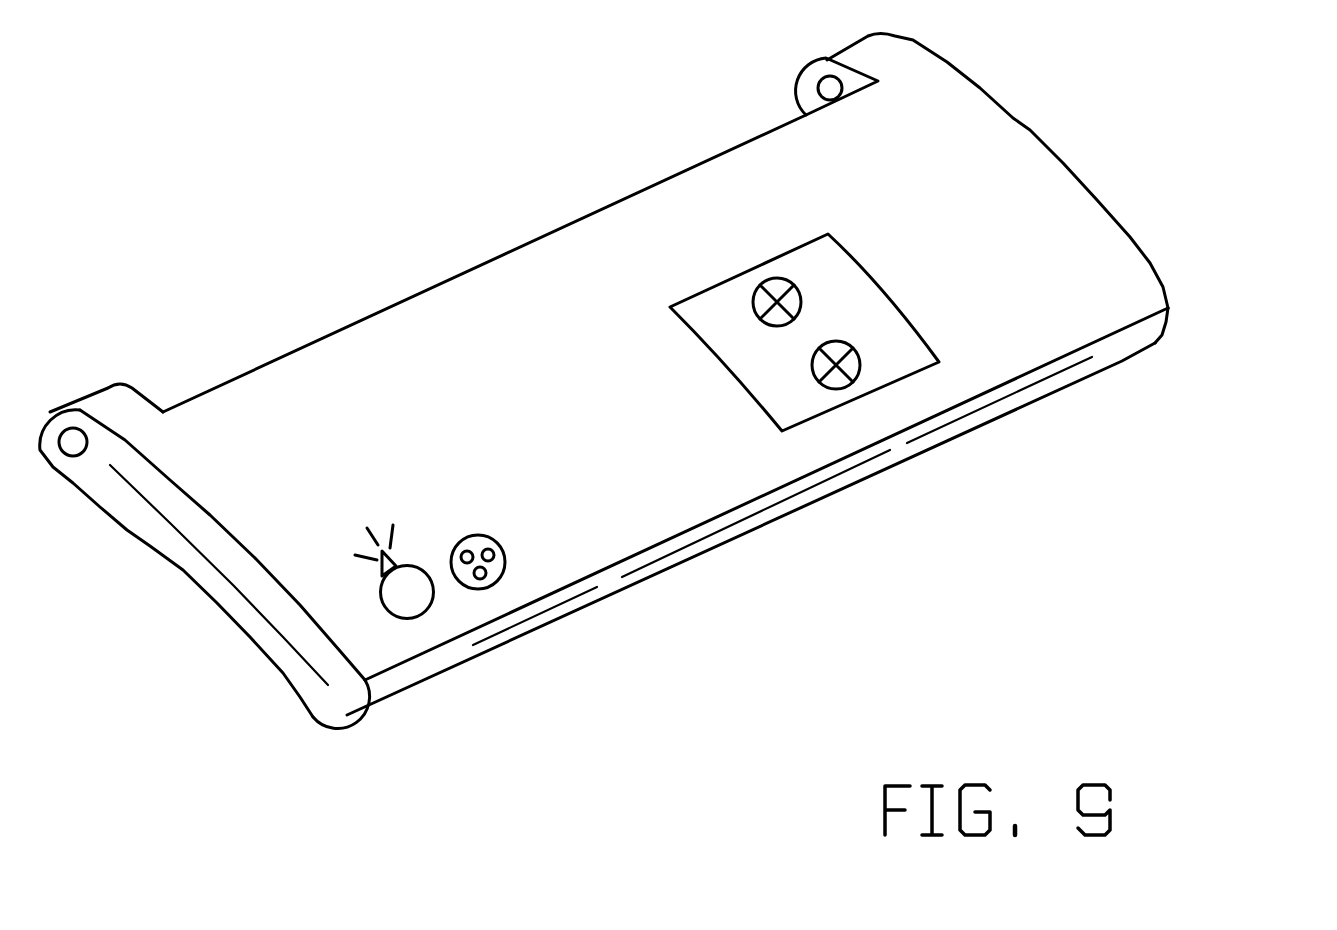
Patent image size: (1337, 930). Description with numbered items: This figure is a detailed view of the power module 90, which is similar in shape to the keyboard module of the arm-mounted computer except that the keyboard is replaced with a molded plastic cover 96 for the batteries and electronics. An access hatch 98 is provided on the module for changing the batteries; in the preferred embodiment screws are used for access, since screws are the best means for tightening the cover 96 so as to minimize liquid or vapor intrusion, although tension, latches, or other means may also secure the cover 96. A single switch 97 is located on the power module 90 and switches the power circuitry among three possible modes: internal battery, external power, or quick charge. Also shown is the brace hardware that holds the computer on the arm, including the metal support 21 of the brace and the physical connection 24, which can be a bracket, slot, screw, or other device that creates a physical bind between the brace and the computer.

The power module 90 is at (1075, 237).
The access hatch 98 is at (793, 408).
The physical connection 24 is at (502, 578).
The switch 97 is at (422, 612).
The metal support 21 is at (313, 719).
The molded plastic cover 96 is at (349, 688).